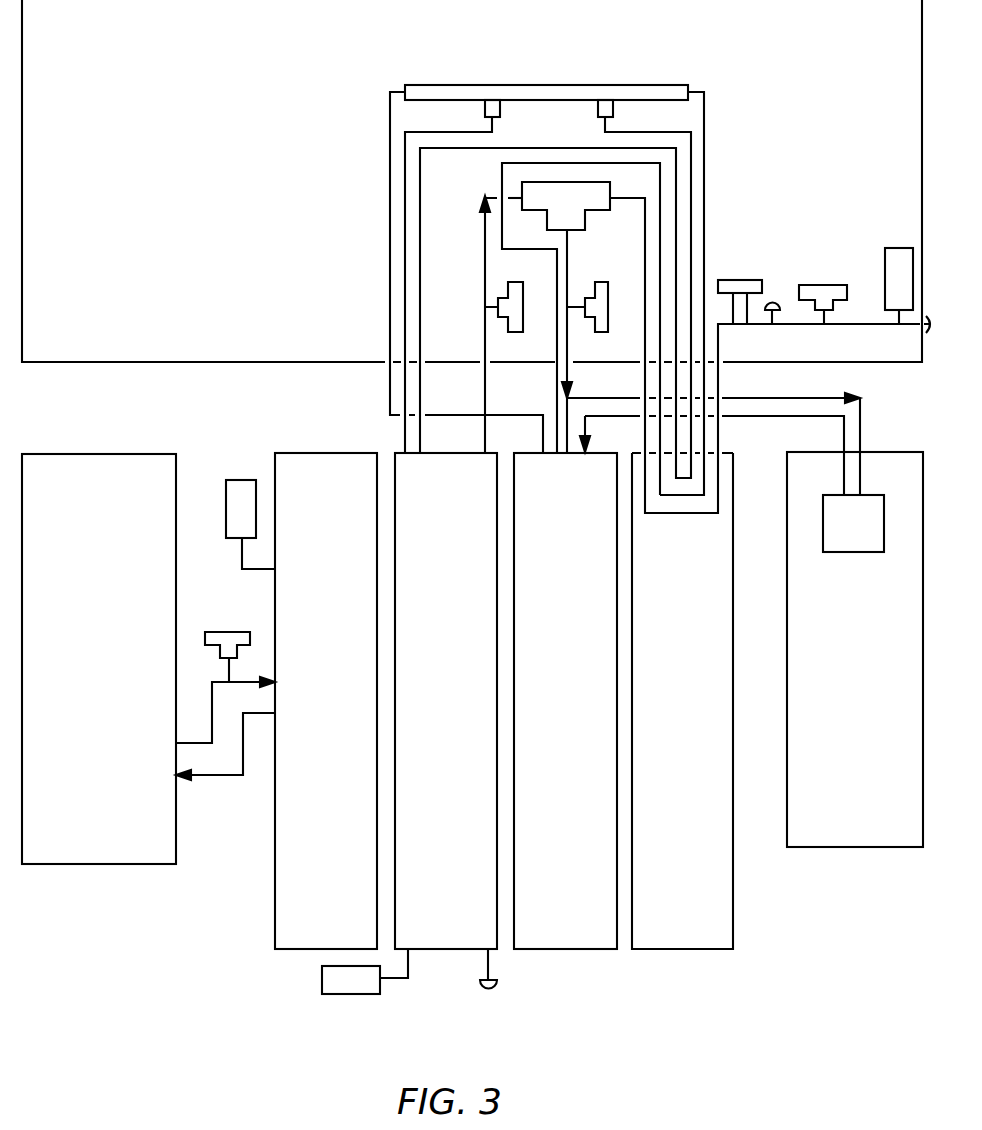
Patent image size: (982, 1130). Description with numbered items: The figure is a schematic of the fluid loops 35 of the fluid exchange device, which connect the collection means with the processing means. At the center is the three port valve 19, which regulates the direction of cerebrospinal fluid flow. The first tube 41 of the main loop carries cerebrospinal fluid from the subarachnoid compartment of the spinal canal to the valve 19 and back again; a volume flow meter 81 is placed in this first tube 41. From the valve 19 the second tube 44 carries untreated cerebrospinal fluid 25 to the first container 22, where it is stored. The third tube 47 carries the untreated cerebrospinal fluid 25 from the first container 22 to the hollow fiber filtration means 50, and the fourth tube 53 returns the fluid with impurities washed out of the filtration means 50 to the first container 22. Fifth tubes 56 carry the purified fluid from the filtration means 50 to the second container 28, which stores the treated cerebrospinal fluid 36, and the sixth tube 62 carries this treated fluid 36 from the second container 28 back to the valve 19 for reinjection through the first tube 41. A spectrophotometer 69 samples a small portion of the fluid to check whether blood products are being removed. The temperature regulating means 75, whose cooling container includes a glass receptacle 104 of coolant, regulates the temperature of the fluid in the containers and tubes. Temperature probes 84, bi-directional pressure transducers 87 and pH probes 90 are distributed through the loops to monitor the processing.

The fluid loops 35 is at (160, 233).
The filtration means 50 is at (512, 84).
The third tube 47 is at (706, 104).
The fourth tube 53 is at (390, 133).
The fifth tube 56 is at (485, 113).
The three port valve 19 is at (603, 182).
The sixth tube 62 is at (485, 256).
The second tube 44 is at (570, 252).
The bi-directional pressure transducers 87 is at (523, 298).
The volume flow meter 81 is at (762, 283).
The pH probes 90 is at (773, 300).
The temperature probes 84 is at (904, 248).
The first tube 41 is at (916, 327).
The temperature regulating means 75 is at (148, 659).
The glass receptacle 104 is at (326, 701).
The second container 28 is at (455, 969).
The treated cerebrospinal fluid 36 is at (446, 718).
The first container 22 is at (590, 969).
The untreated cerebrospinal fluid 25 is at (565, 718).
The spectrophotometer 69 is at (855, 649).